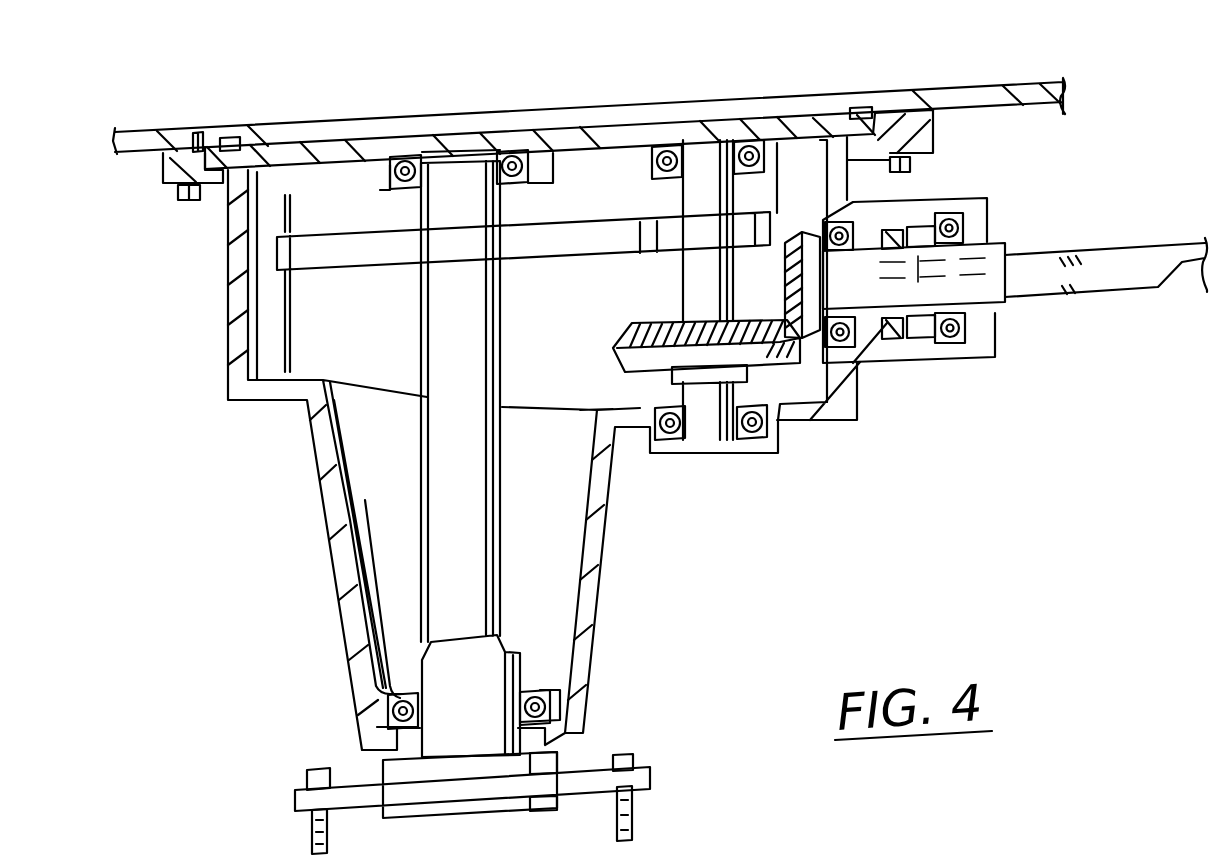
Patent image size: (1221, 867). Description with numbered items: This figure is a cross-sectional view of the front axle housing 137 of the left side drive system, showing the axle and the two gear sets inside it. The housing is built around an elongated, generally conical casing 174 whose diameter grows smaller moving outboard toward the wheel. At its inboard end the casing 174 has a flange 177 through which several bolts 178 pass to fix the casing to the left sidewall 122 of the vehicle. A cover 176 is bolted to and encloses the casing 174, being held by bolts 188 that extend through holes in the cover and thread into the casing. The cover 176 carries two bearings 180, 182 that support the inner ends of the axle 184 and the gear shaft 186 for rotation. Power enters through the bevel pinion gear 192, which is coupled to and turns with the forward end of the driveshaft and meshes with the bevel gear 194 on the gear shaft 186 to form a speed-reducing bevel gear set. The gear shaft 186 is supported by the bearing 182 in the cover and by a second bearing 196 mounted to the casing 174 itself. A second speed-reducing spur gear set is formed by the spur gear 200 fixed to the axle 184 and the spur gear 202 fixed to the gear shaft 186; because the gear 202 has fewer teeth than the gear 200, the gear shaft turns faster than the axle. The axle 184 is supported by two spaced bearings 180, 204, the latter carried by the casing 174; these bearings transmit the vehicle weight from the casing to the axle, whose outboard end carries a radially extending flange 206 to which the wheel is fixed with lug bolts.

The left sidewall 122 is at (440, 112).
The front axle housing 137 is at (730, 548).
The casing 174 is at (275, 404).
The cover 176 is at (333, 152).
The flange 177 is at (170, 208).
The bolts 178 is at (190, 206).
The bearing 180 is at (514, 150).
The bearing 182 is at (667, 146).
The axle 184 is at (480, 318).
The gear shaft 186 is at (648, 282).
The bolts 188 is at (229, 134).
The bevel pinion gear 192 is at (870, 266).
The bevel gear 194 is at (612, 345).
The bearing 196 is at (748, 445).
The spur gear 200 is at (390, 272).
The spur gear 202 is at (742, 210).
The bearing 204 is at (583, 705).
The flange 206 is at (600, 762).